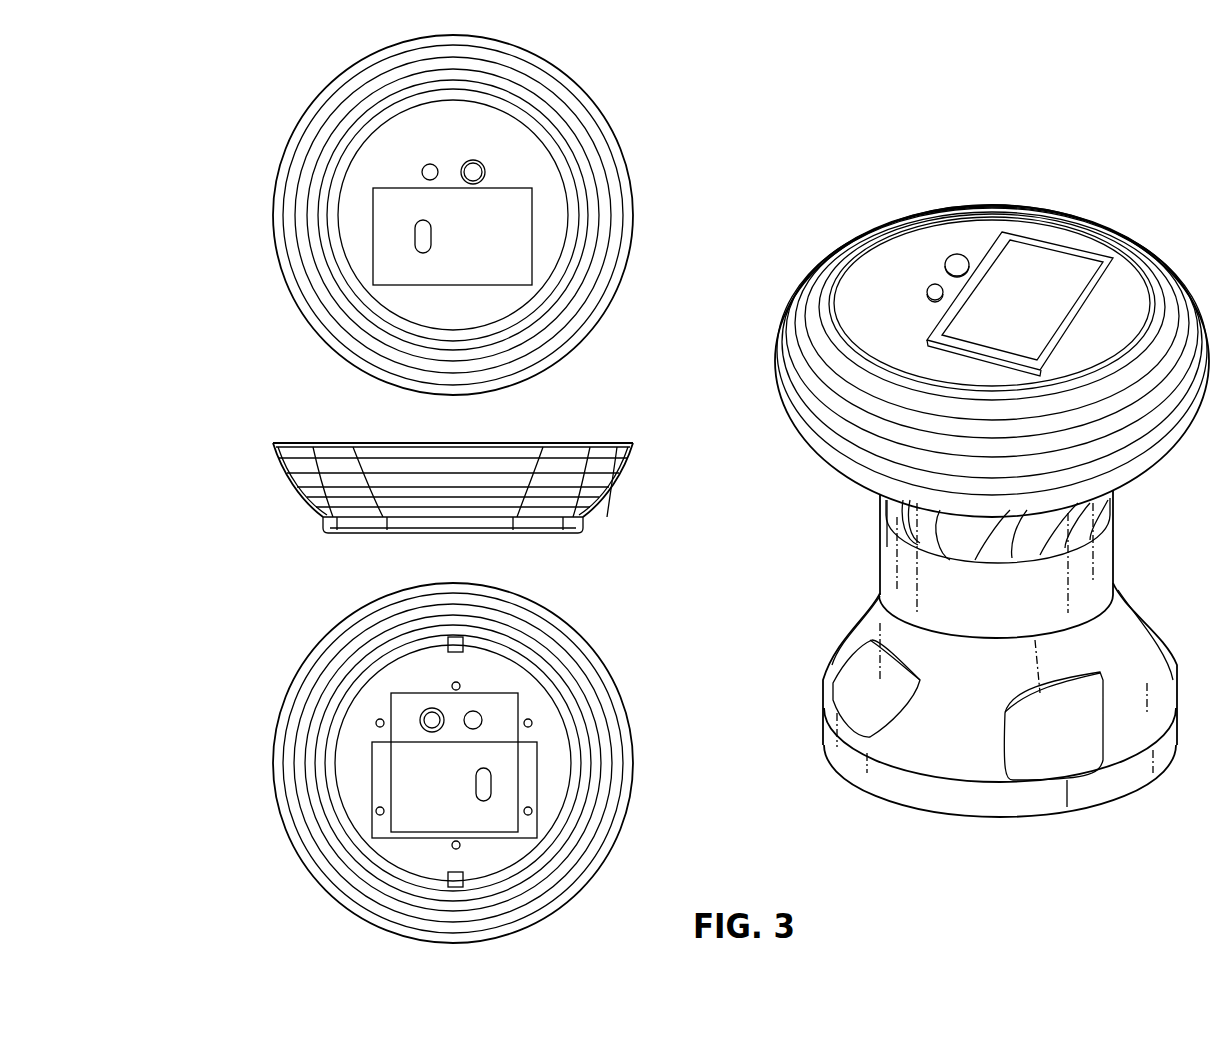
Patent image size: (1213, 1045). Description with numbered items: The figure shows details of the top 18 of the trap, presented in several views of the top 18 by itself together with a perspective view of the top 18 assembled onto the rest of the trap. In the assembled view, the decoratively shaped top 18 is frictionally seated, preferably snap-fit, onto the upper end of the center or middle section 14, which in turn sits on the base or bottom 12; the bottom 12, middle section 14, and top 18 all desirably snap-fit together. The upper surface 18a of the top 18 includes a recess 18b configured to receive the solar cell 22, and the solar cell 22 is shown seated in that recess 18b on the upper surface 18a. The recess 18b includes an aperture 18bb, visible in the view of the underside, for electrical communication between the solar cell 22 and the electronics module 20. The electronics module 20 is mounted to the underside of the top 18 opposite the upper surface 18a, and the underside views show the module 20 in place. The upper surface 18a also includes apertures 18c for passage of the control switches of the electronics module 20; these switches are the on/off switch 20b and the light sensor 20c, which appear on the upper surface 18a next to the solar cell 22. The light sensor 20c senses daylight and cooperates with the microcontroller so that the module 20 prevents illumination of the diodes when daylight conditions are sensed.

The base or bottom 12 is at (947, 762).
The center or middle section 14 is at (882, 573).
The top 18 is at (283, 155).
The upper surface 18a is at (523, 143).
The recess 18b is at (515, 222).
The aperture 18bb is at (432, 242).
The apertures 18c is at (473, 160).
The electronics module 20 is at (403, 707).
The on/off switch 20b is at (935, 285).
The light sensor 20c is at (955, 253).
The solar cell 22 is at (1070, 262).